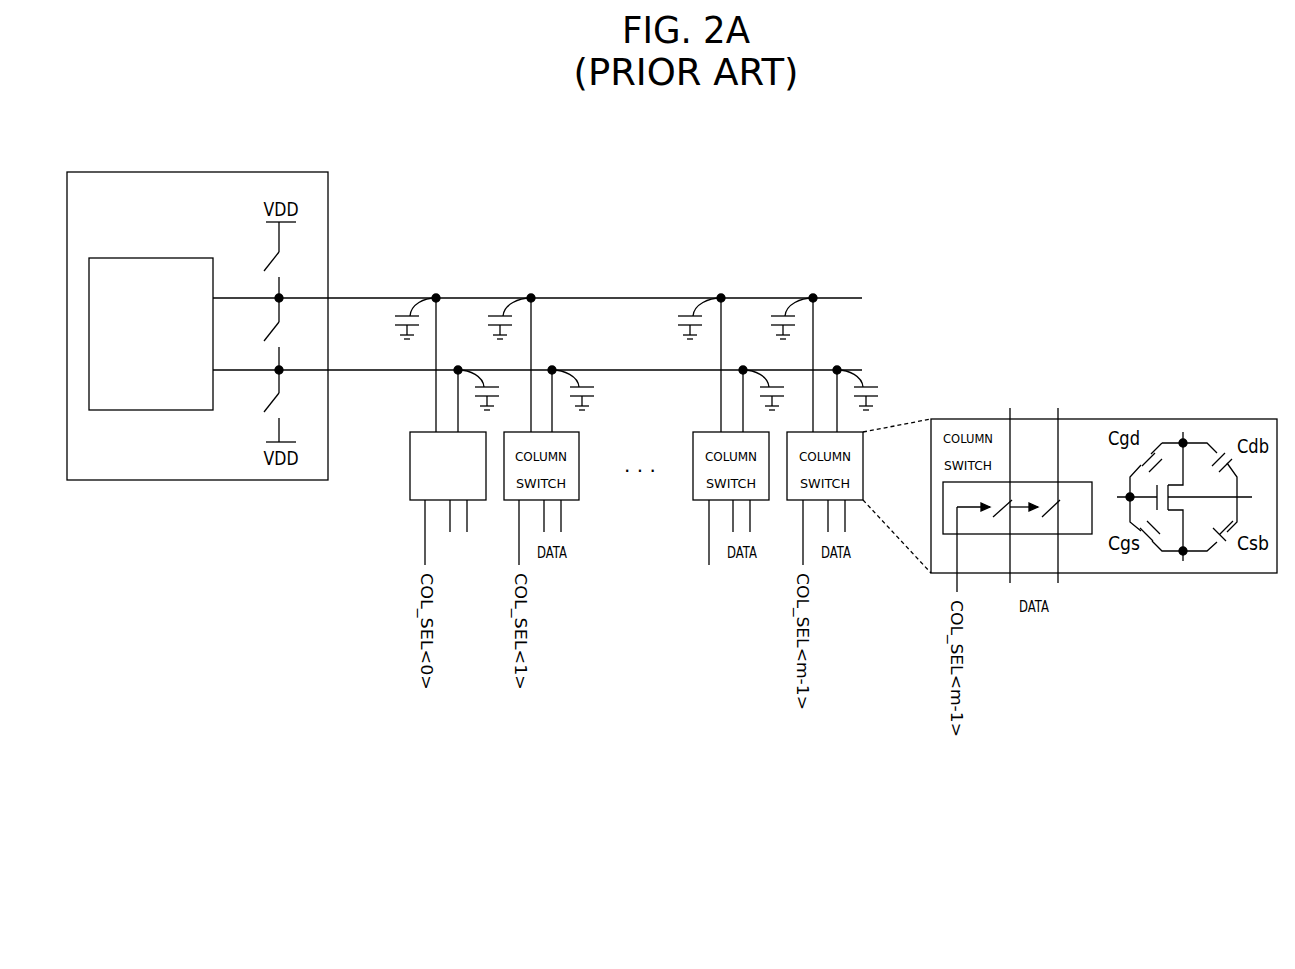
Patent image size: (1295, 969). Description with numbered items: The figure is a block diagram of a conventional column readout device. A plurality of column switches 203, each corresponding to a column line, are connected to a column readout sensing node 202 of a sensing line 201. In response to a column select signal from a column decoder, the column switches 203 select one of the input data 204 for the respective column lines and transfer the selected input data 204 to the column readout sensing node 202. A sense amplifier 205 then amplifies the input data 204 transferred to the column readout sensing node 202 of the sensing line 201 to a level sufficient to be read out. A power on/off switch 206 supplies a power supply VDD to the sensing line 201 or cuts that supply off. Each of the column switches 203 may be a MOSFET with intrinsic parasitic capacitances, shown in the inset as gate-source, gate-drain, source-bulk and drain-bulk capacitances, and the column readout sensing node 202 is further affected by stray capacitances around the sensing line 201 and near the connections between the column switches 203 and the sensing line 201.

The sensing line 201 is at (358, 297).
The column readout sensing node 202 is at (439, 297).
The column switches 203 is at (410, 464).
The input data 204 is at (469, 522).
The sense amplifier 205 is at (155, 258).
The power on/off switch 206 is at (266, 265).